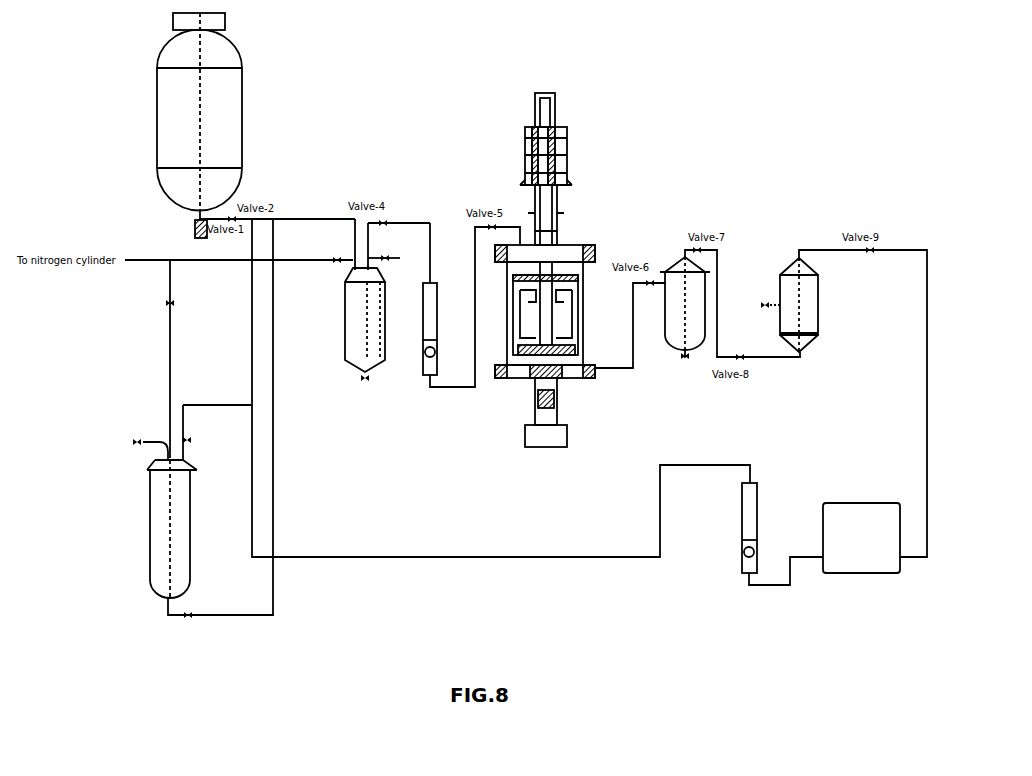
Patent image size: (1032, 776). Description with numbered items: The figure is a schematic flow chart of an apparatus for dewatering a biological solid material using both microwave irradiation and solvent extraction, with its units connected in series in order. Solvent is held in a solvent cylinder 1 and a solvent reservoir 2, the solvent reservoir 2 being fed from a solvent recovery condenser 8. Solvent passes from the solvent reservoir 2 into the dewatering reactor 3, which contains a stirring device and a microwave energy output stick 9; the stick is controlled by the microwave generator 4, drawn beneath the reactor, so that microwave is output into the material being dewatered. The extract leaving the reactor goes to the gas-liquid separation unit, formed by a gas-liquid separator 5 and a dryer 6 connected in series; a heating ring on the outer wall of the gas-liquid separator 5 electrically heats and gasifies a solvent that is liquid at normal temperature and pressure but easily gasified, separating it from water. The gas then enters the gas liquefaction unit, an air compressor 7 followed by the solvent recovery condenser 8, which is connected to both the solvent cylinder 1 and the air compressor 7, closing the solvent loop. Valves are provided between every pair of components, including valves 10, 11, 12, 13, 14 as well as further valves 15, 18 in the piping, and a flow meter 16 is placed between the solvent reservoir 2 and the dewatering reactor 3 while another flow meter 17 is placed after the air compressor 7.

The solvent cylinder 1 is at (248, 70).
The solvent reservoir 2 is at (365, 339).
The dewatering reactor 3 is at (567, 268).
The microwave generator 4 is at (532, 426).
The gas-liquid separator 5 is at (685, 293).
The dryer 6 is at (808, 305).
The air compressor 7 is at (861, 538).
The solvent recovery condenser 8 is at (165, 529).
The microwave energy output stick 9 is at (563, 378).
The valve 10 is at (313, 268).
The valve 11 is at (396, 267).
The valve 12 is at (161, 326).
The valve 13 is at (131, 433).
The valve 14 is at (196, 438).
The valve 15 is at (181, 628).
The flow meter 16 is at (410, 330).
The flow meter 17 is at (752, 510).
The valve 18 is at (679, 366).